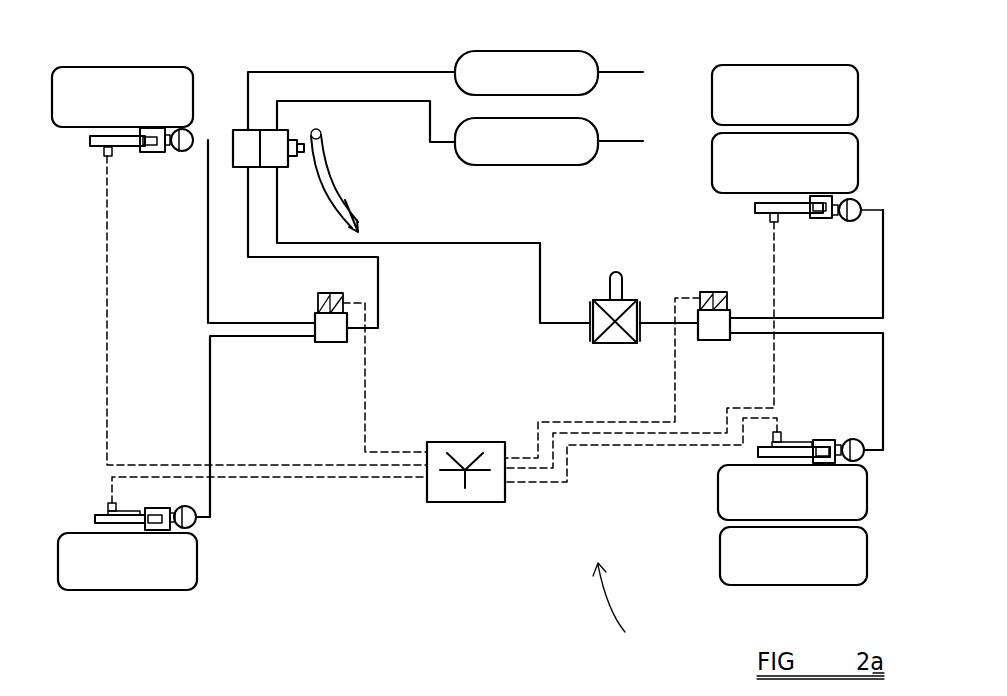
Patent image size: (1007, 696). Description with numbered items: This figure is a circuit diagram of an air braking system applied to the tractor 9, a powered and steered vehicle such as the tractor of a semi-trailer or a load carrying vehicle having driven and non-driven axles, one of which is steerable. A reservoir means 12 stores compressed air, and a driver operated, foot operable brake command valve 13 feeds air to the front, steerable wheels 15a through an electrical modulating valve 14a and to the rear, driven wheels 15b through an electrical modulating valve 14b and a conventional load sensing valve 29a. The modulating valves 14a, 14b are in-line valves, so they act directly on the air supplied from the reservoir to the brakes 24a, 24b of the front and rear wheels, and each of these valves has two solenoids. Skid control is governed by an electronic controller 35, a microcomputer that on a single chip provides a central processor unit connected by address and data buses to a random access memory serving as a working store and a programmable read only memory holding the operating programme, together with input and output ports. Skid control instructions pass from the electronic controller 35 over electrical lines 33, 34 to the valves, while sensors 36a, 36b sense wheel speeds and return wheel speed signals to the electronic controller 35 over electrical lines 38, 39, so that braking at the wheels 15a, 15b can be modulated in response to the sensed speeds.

The tractor 9 is at (620, 607).
The reservoir means 12 is at (526, 108).
The foot brake command valve 13 is at (347, 181).
The electrical modulating valve 14a is at (328, 343).
The electrical modulating valve 14b is at (715, 340).
The front steerable wheels 15a is at (138, 67).
The rear driven wheels 15b is at (795, 67).
The brake 24a is at (154, 152).
The brake 24b is at (150, 508).
The load sensing valve 29a is at (598, 343).
The electrical line 33 is at (612, 349).
The electrical line 34 is at (687, 292).
The electronic controller 35 is at (495, 502).
The sensor 36a is at (105, 150).
The sensor 36b is at (100, 510).
The electrical line 38 is at (268, 465).
The electrical line 39 is at (280, 478).